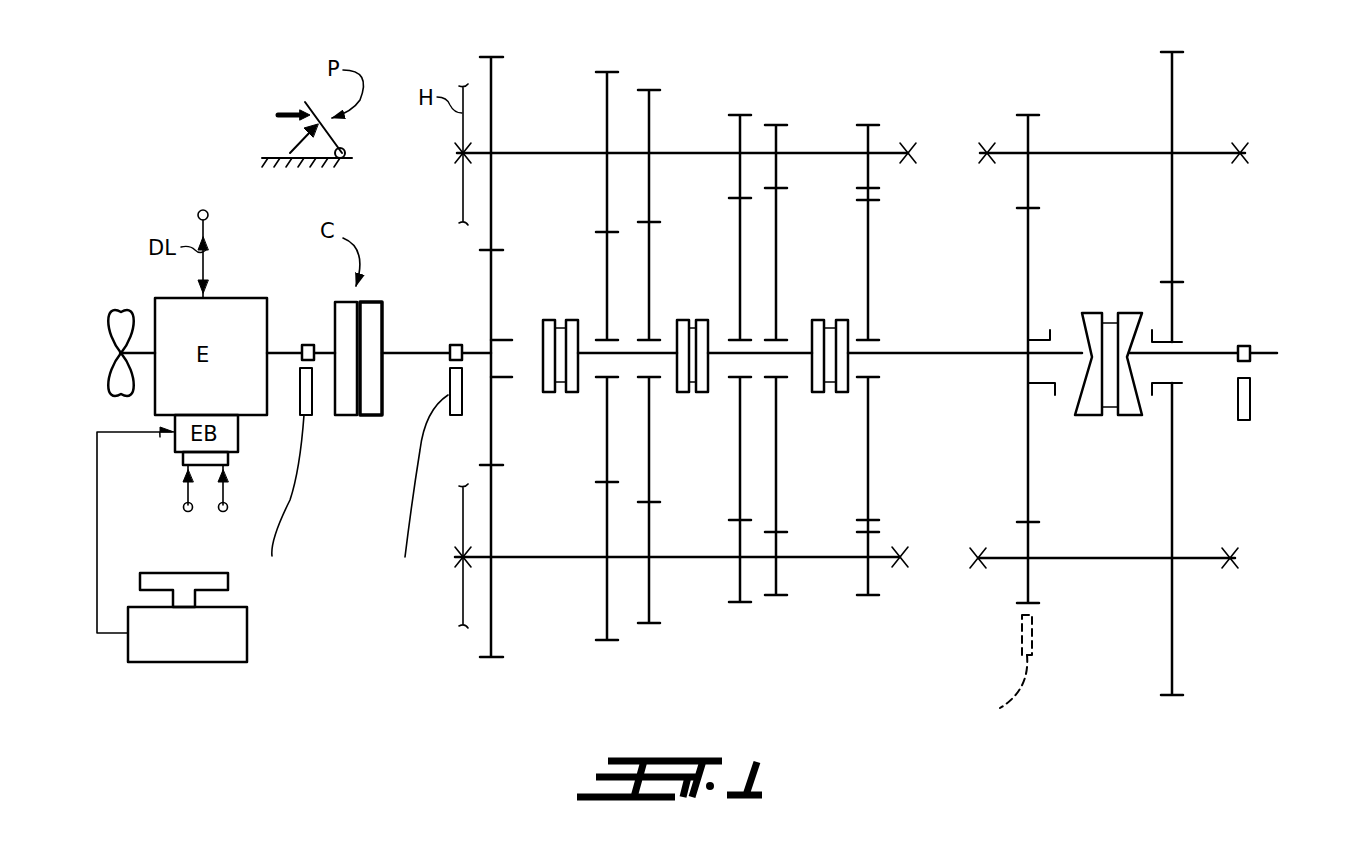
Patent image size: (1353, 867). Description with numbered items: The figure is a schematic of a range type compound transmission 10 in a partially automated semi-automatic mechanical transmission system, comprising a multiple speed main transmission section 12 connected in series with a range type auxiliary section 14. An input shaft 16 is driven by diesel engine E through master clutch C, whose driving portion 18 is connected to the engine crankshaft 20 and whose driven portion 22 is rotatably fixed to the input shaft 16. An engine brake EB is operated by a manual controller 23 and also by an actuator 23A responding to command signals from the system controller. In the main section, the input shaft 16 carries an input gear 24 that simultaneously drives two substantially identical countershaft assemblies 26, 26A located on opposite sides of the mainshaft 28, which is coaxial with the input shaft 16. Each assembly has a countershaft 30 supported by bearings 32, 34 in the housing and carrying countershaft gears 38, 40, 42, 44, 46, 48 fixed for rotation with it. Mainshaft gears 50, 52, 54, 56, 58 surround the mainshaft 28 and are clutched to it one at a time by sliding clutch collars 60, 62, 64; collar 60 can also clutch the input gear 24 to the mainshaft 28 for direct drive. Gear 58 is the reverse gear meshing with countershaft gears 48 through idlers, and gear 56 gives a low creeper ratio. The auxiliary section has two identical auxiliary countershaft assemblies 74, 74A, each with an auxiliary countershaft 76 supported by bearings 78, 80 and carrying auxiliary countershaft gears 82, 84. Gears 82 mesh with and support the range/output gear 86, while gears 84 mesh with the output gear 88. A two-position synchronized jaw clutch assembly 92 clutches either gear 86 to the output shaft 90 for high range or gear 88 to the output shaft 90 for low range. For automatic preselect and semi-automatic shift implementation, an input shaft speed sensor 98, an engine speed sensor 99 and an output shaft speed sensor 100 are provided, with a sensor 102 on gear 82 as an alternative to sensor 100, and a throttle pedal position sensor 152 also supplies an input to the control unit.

The range type compound transmission 10 is at (944, 138).
The main transmission section 12 is at (702, 108).
The range type auxiliary section 14 is at (1080, 90).
The input shaft 16 is at (424, 353).
The driving portion 18 is at (343, 417).
The engine crankshaft 20 is at (287, 344).
The driven portion 22 is at (368, 417).
The manual controller 23 is at (247, 627).
The actuator 23A is at (183, 462).
The input gear 24 is at (492, 282).
The countershaft assembly 26 is at (536, 144).
The countershaft assembly 26A is at (576, 570).
The mainshaft 28 is at (994, 358).
The countershaft 30 is at (548, 155).
The bearing 32 is at (448, 553).
The bearing 34 is at (905, 568).
The countershaft gear 38 is at (494, 640).
The countershaft gear 40 is at (605, 628).
The countershaft gear 42 is at (652, 610).
The countershaft gear 44 is at (737, 585).
The countershaft gear 46 is at (778, 582).
The countershaft gear 48 is at (866, 585).
The mainshaft gear 50 is at (604, 455).
The mainshaft gear 52 is at (650, 448).
The mainshaft gear 54 is at (738, 470).
The mainshaft drive gear 56 is at (777, 448).
The mainshaft gear 58 is at (867, 480).
The sliding clutch collar 60 is at (544, 386).
The sliding clutch collar 62 is at (714, 320).
The sliding clutch collar 64 is at (812, 325).
The auxiliary countershaft assembly 74 is at (1075, 146).
The auxiliary countershaft assembly 74A is at (1120, 566).
The auxiliary countershaft 76 is at (1135, 160).
The bearing 78 is at (984, 174).
The bearing 80 is at (1252, 152).
The auxiliary section countershaft gear 82 is at (1050, 96).
The auxiliary section countershaft gear 84 is at (1175, 92).
The range/output gear 86 is at (1027, 282).
The output gear 88 is at (1170, 303).
The output shaft 90 is at (1210, 350).
The two-position synchronized jaw clutch assembly 92 is at (1097, 428).
The input shaft speed sensor 98 is at (431, 462).
The engine speed sensor 99 is at (278, 497).
The output shaft speed sensor 100 is at (1250, 395).
The sensor 102 is at (1020, 637).
The throttle pedal position sensor 152 is at (286, 134).